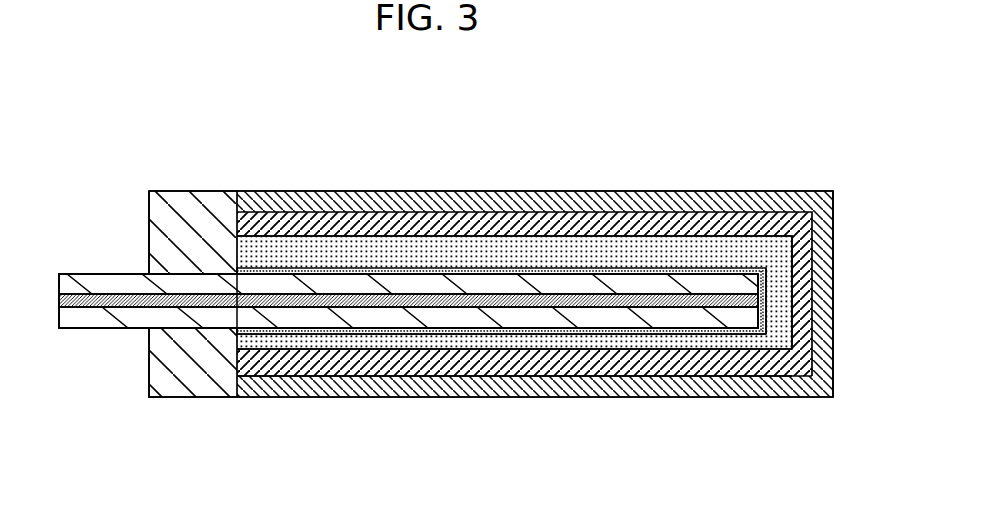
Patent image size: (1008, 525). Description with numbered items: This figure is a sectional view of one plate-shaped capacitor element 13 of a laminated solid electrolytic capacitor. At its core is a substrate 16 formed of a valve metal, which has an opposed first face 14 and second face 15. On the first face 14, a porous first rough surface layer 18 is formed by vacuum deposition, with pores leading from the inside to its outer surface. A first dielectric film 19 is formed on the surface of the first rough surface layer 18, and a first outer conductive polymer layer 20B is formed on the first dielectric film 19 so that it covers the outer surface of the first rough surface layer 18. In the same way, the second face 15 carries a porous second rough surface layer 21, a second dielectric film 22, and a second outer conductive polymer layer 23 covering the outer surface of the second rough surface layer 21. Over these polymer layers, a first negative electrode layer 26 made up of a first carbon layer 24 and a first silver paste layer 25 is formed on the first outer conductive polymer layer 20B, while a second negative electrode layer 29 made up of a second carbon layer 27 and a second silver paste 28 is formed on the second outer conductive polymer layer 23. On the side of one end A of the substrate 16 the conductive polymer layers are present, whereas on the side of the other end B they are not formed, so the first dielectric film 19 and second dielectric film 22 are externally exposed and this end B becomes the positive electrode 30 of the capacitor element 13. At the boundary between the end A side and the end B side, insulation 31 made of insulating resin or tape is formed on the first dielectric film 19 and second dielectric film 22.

The capacitor element 13 is at (818, 132).
The first face 14 is at (468, 308).
The second face 15 is at (338, 295).
The substrate 16 is at (263, 296).
The first rough surface layer 18 is at (383, 320).
The first dielectric film 19 is at (534, 340).
The first outer conductive polymer layer 20B is at (605, 335).
The second rough surface layer 21 is at (430, 287).
The second dielectric film 22 is at (500, 272).
The second outer conductive polymer layer 23 is at (578, 250).
The first carbon layer 24 is at (778, 357).
The first silver paste layer 25 is at (728, 385).
The first negative electrode layer 26 is at (524, 421).
The second carbon layer 27 is at (722, 230).
The second silver paste 28 is at (668, 205).
The second negative electrode layer 29 is at (535, 241).
The positive electrode 30 is at (62, 337).
The insulation 31 is at (178, 235).
The one end A is at (767, 313).
The other end B is at (59, 280).